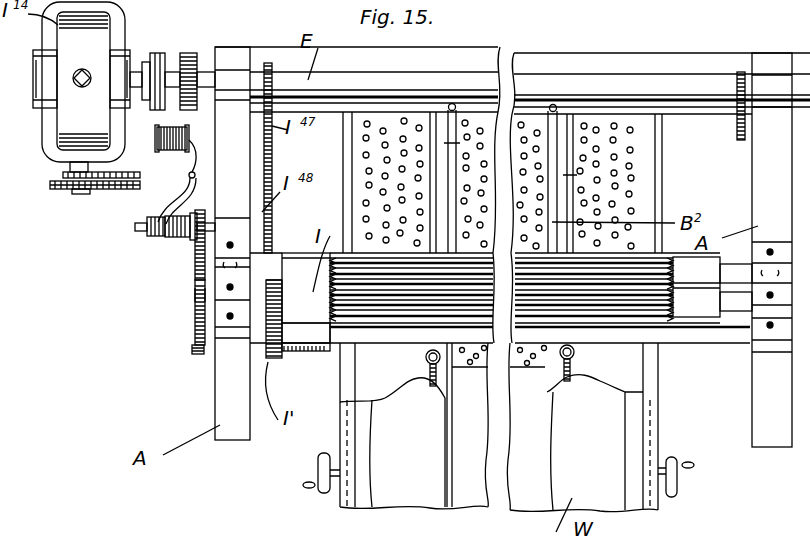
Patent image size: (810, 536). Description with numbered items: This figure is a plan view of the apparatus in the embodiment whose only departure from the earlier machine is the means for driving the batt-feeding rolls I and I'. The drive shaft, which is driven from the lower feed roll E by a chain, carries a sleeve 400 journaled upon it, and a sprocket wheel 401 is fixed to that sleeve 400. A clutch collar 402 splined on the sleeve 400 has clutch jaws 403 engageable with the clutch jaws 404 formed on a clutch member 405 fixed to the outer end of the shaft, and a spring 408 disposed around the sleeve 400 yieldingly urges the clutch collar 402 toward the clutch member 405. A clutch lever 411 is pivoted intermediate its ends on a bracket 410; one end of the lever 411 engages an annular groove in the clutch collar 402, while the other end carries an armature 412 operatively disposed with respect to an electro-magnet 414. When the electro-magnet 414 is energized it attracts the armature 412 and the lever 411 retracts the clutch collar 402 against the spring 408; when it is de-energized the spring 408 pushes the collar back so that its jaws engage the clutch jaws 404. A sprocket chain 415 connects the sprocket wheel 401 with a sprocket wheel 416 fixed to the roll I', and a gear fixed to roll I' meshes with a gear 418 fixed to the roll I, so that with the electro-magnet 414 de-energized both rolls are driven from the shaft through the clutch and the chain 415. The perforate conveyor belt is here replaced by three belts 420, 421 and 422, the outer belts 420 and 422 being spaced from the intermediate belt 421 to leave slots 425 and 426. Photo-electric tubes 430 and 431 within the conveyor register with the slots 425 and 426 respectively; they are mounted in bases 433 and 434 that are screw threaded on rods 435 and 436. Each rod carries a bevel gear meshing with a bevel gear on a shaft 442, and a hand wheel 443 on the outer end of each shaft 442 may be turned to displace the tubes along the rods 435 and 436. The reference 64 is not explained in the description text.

The electro-magnet 414 is at (176, 124).
The armature 412 is at (193, 115).
The clutch lever 411 is at (190, 160).
The bracket 410 is at (200, 172).
The clutch jaws 404 is at (145, 222).
The clutch member 405 is at (140, 227).
The clutch collar 402 is at (155, 224).
The clutch jaws 403 is at (180, 237).
The spring 408 is at (190, 236).
The sprocket wheel 401 is at (195, 245).
The sleeve 400 is at (200, 290).
The sprocket chain 415 is at (197, 295).
The sprocket wheel 416 is at (197, 347).
The gear 418 is at (282, 350).
The belt 420 is at (425, 95).
The slot 425 is at (452, 95).
The belt 421 is at (533, 120).
The slot 426 is at (568, 128).
The belt 422 is at (640, 197).
The vertical rack 64 is at (262, 222).
The photo-electric tube 430 is at (425, 357).
The photo-electric tube 431 is at (576, 353).
The base 433 is at (431, 368).
The rod 435 is at (442, 402).
The base 434 is at (575, 372).
The rod 436 is at (548, 418).
The hand wheel 443 is at (318, 470).
The shaft 442 is at (320, 494).